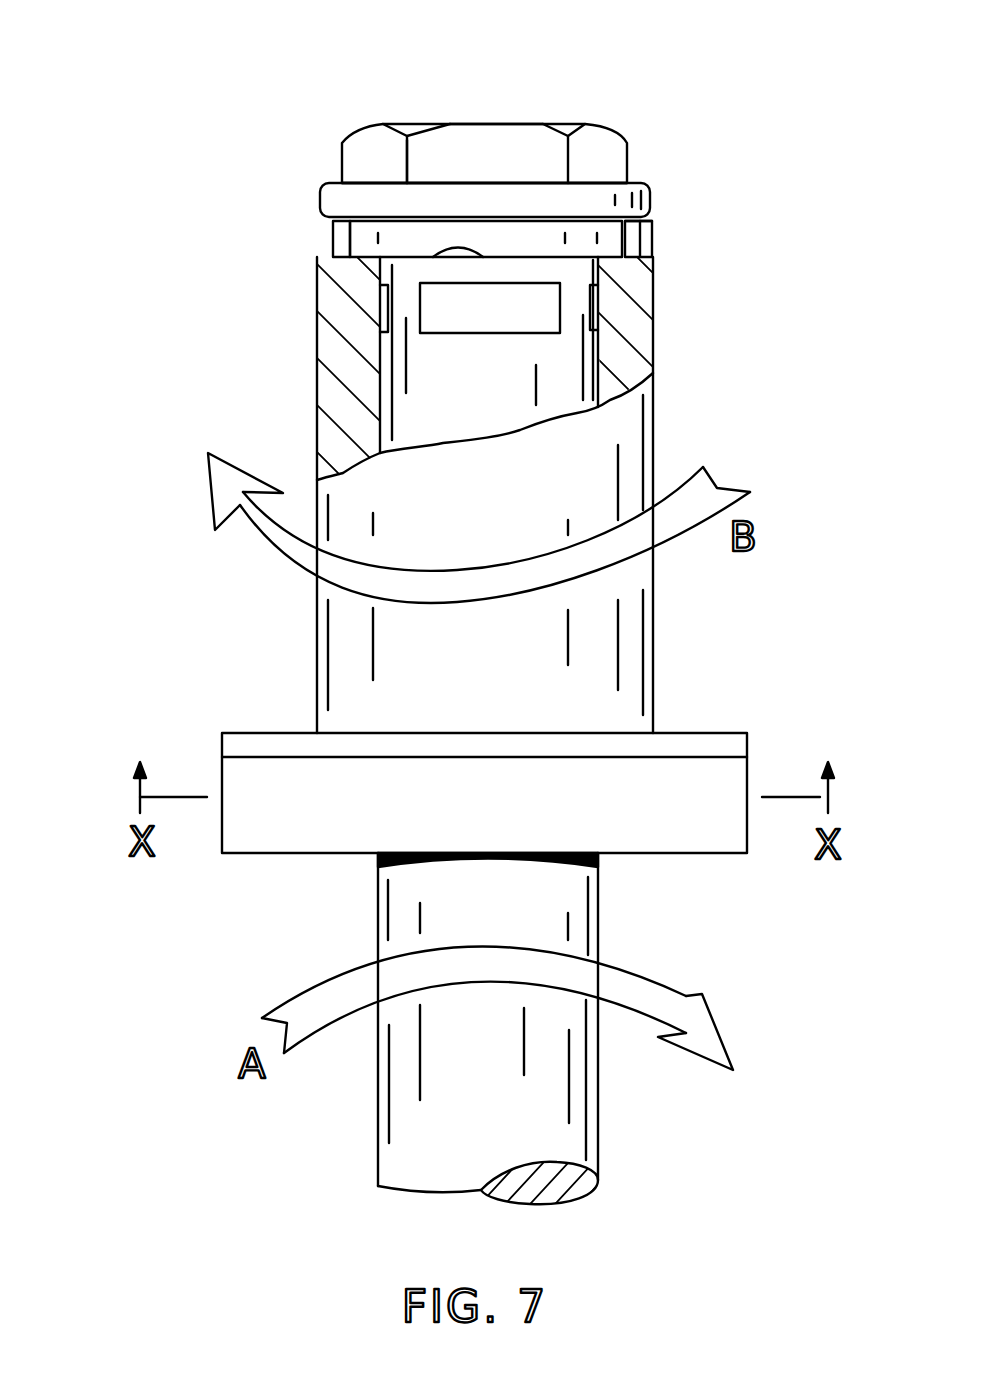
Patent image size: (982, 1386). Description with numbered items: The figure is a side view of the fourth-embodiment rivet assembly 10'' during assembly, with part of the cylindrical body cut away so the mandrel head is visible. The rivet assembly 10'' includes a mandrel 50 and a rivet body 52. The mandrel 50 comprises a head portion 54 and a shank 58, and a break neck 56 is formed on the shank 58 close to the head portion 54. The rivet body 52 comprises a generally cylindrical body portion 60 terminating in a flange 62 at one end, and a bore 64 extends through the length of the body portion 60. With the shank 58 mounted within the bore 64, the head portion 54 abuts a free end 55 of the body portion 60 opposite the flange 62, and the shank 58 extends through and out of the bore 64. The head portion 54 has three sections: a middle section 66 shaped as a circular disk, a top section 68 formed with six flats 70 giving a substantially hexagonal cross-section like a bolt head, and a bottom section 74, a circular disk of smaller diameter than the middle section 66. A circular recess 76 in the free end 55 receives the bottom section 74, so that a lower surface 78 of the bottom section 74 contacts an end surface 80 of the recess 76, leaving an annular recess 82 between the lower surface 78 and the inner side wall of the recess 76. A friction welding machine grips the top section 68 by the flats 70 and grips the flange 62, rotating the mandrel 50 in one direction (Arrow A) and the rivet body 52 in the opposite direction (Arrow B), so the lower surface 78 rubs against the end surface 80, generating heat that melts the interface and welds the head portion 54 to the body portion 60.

The head portion 54 is at (272, 69).
The flats 70 is at (377, 140).
The top section 68 is at (410, 140).
The middle section 66 is at (540, 200).
The bottom section 74 is at (417, 233).
The circular recess 76 is at (645, 253).
The annular recess 82 is at (320, 243).
The free end 55 is at (650, 222).
The rivet body 52 is at (200, 582).
The break neck 56 is at (507, 313).
The bore 64 is at (395, 376).
The lower surface 78 is at (570, 263).
The end surface 80 is at (430, 252).
The cylindrical body portion 60 is at (343, 710).
The flange 62 is at (673, 837).
The shank 58 is at (526, 1131).
The mandrel 50 is at (190, 948).
The rivet assembly 10'' is at (195, 1006).